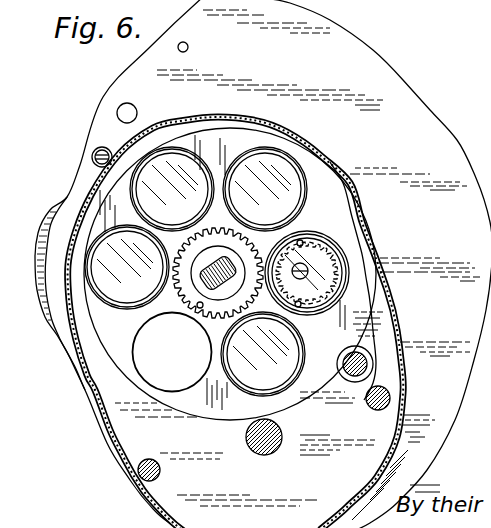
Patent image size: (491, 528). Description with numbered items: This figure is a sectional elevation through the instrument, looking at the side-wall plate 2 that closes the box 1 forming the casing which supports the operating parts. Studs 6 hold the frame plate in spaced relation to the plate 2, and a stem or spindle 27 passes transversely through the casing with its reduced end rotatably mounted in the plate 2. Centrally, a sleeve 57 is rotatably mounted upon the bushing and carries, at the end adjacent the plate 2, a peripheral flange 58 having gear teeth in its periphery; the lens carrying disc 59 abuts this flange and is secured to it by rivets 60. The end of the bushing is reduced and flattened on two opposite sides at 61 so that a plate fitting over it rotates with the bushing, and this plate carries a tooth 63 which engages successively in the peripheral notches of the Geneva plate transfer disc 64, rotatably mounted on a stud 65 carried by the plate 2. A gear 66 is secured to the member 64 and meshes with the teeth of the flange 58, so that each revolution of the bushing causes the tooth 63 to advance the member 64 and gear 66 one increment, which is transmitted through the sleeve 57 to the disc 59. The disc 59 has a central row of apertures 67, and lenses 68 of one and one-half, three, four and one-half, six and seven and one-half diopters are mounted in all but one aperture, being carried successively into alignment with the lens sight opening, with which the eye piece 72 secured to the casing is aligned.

The box 1 is at (376, 279).
The plate 2 is at (378, 62).
The studs 6 is at (161, 469).
The stem or spindle 27 is at (262, 440).
The sleeve 57 is at (220, 300).
The peripheral flange 58 is at (198, 312).
The lens carrying disc 59 is at (240, 138).
The rivets 60 is at (232, 248).
The flattened reduced end 61 is at (212, 263).
The tooth 63 is at (347, 181).
The Geneva plate transfer disc 64 is at (360, 303).
The stud 65 is at (338, 232).
The gear 66 is at (340, 262).
The apertures 67 is at (193, 389).
The lenses 68 is at (167, 160).
The eye piece 72 is at (63, 204).